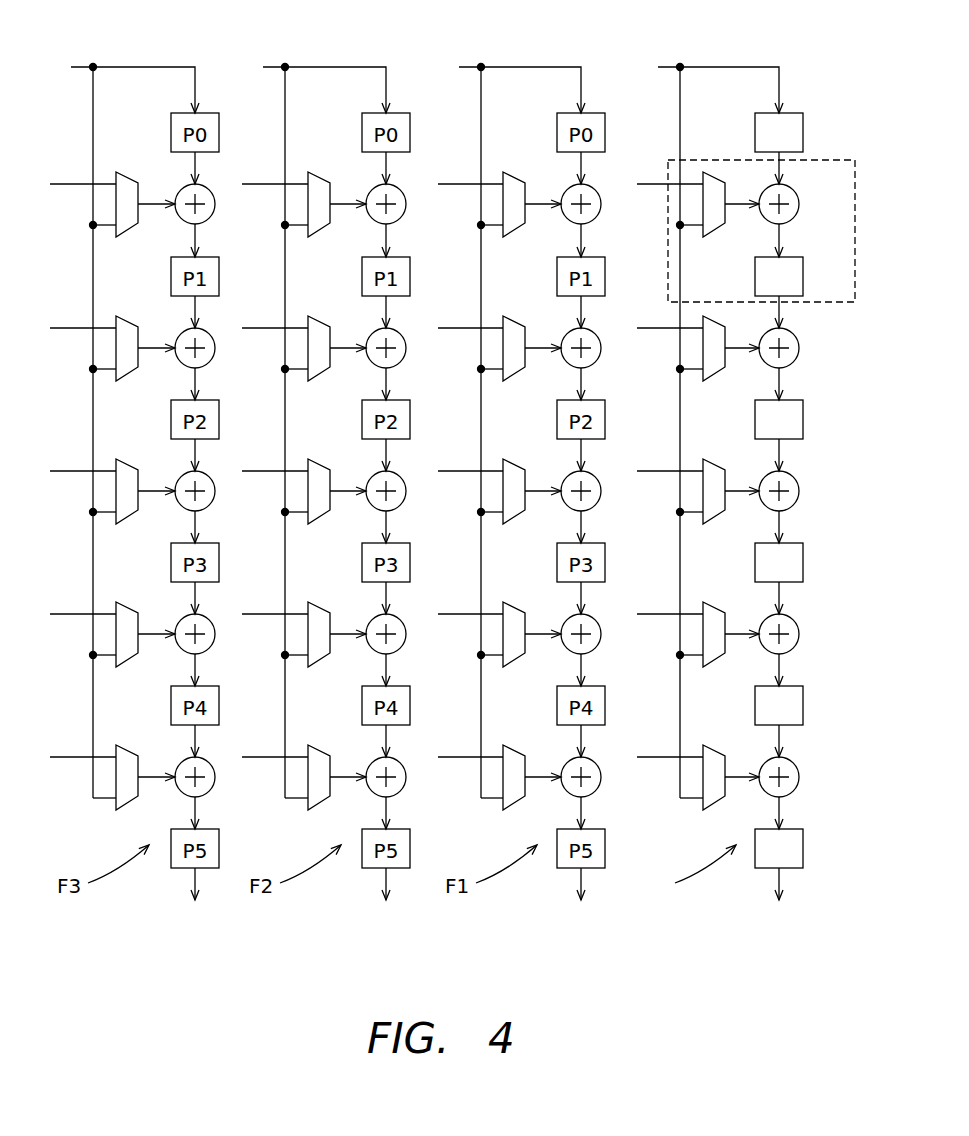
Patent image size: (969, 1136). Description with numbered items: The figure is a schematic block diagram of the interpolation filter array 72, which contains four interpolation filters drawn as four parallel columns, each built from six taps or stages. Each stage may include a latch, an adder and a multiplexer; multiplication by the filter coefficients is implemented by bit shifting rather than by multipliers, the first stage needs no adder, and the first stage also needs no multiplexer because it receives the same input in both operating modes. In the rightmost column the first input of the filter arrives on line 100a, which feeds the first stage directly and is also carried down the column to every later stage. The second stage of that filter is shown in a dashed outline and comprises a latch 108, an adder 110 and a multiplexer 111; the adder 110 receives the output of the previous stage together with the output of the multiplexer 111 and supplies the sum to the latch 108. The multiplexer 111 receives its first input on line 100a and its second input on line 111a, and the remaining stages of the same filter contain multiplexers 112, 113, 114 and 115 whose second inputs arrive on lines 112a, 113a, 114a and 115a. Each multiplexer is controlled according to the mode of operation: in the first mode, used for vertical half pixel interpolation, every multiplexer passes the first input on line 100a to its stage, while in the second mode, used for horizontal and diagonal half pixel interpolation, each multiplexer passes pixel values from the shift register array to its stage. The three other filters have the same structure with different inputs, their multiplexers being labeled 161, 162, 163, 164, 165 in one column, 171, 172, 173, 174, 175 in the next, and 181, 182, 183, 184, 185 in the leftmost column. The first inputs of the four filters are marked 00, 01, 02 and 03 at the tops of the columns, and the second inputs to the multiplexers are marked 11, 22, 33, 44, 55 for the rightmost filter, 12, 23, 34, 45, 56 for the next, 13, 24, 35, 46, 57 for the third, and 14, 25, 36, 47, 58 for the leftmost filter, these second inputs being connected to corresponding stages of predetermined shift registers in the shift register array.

The interpolation filter array 72 is at (177, 968).
The line 100a is at (665, 66).
The latch 108 is at (794, 257).
The adder 110 is at (794, 189).
The multiplexer 111 is at (713, 177).
The multiplexer 112 is at (713, 321).
The multiplexer 113 is at (713, 464).
The multiplexer 114 is at (713, 607).
The multiplexer 115 is at (713, 750).
The line 111a is at (664, 182).
The line 112a is at (664, 326).
The line 113a is at (664, 469).
The line 114a is at (664, 612).
The line 115a is at (664, 755).
The multiplexer 161 is at (522, 172).
The multiplexer 162 is at (522, 316).
The multiplexer 163 is at (522, 459).
The multiplexer 164 is at (522, 602).
The multiplexer 165 is at (522, 745).
The multiplexer 171 is at (327, 172).
The multiplexer 172 is at (327, 316).
The multiplexer 173 is at (327, 459).
The multiplexer 174 is at (327, 602).
The multiplexer 175 is at (327, 745).
The multiplexer 181 is at (135, 172).
The multiplexer 182 is at (135, 316).
The multiplexer 183 is at (135, 459).
The multiplexer 184 is at (135, 602).
The multiplexer 185 is at (135, 745).
The pixel input line 00 is at (704, 426).
The pixel input line 01 is at (506, 426).
The pixel input line 02 is at (310, 426).
The pixel input line 03 is at (119, 426).
The pixel pair input 11 is at (670, 174).
The pixel pair input 22 is at (670, 318).
The pixel pair input 33 is at (670, 461).
The pixel pair input 44 is at (670, 604).
The pixel pair input 55 is at (670, 747).
The pixel pair input 12 is at (470, 174).
The pixel pair input 23 is at (470, 318).
The pixel pair input 34 is at (470, 461).
The pixel pair input 45 is at (470, 604).
The pixel pair input 56 is at (470, 747).
The pixel pair input 13 is at (275, 174).
The pixel pair input 24 is at (275, 318).
The pixel pair input 35 is at (275, 461).
The pixel pair input 46 is at (275, 604).
The pixel pair input 57 is at (275, 747).
The pixel pair input 14 is at (83, 174).
The pixel pair input 25 is at (83, 318).
The pixel pair input 36 is at (83, 461).
The pixel pair input 47 is at (83, 604).
The pixel pair input 58 is at (83, 747).